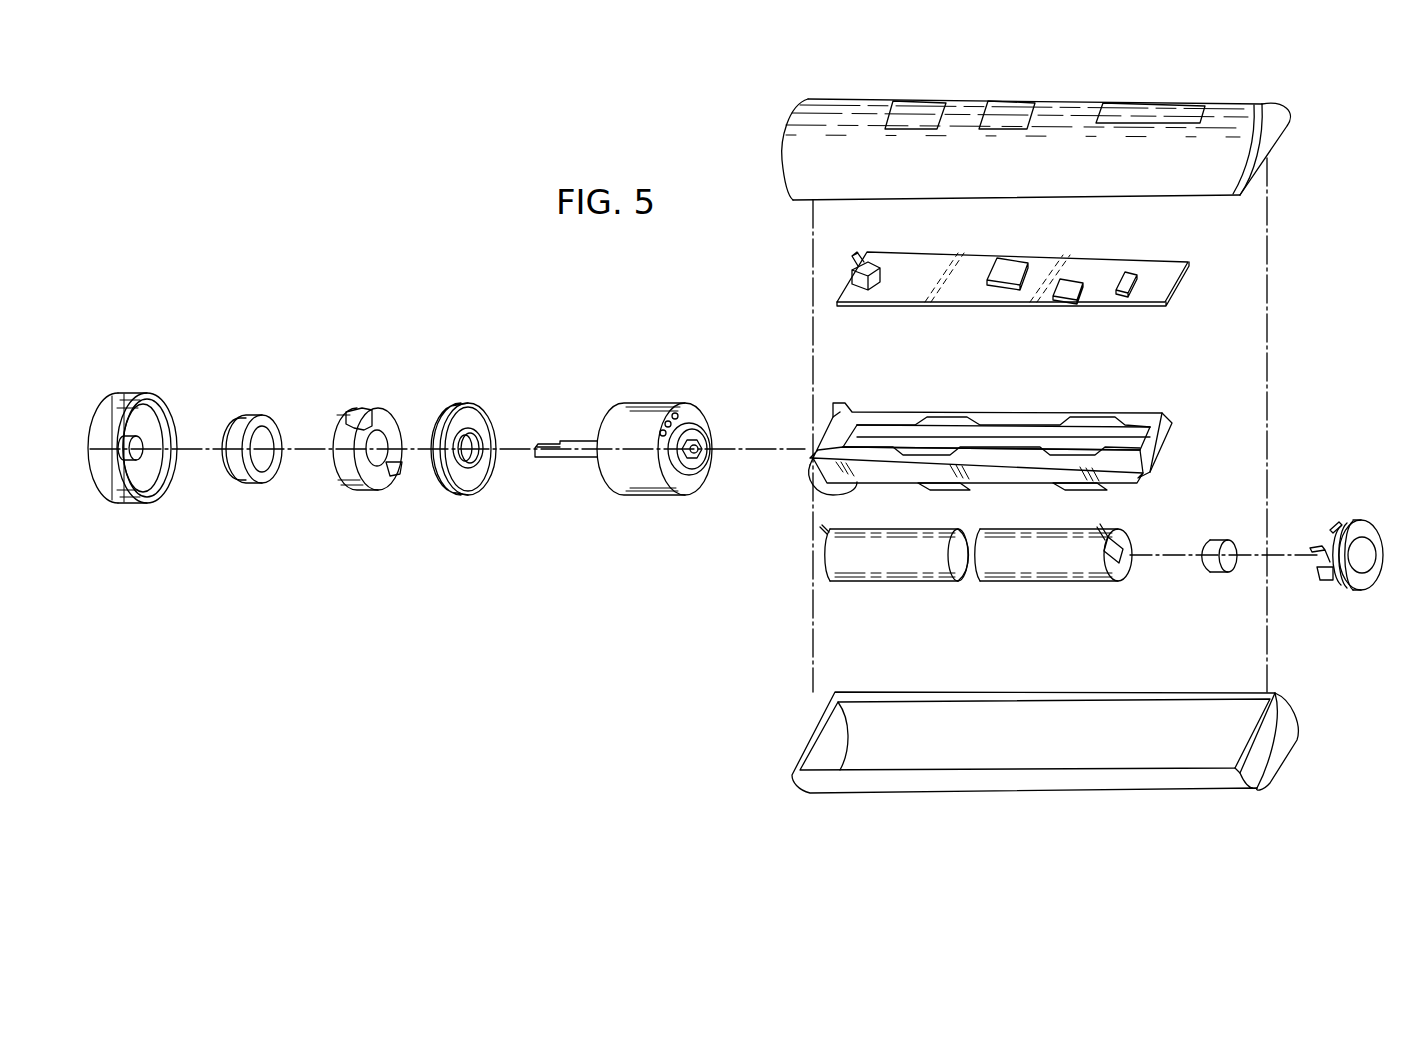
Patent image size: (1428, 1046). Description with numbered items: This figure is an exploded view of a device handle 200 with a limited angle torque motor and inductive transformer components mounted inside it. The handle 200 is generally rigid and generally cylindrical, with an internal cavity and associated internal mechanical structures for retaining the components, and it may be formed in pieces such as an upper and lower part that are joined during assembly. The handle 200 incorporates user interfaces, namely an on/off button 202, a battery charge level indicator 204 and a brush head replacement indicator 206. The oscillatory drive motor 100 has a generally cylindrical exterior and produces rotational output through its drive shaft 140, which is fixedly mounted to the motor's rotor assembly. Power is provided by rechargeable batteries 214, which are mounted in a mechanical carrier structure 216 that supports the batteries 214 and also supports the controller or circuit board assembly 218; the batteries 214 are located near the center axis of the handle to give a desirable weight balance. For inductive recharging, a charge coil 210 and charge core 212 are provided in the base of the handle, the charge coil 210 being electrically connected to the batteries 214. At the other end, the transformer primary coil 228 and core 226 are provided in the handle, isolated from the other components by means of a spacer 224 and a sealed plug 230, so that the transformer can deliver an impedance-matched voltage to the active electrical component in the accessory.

The oscillatory drive motor 100 is at (660, 394).
The drive shaft 140 is at (578, 440).
The handle 200 is at (975, 103).
The on/off button 202 is at (922, 102).
The battery charge level indicator 204 is at (1146, 107).
The brush head replacement indicator 206 is at (1030, 106).
The charge coil 210 is at (1355, 517).
The charge core 212 is at (1218, 540).
The rechargeable batteries 214 is at (1027, 575).
The mechanical carrier structure 216 is at (1138, 416).
The circuit board assembly 218 is at (1155, 290).
The spacer 224 is at (481, 405).
The core 226 is at (374, 408).
The primary coil 228 is at (266, 420).
The sealed plug 230 is at (160, 397).